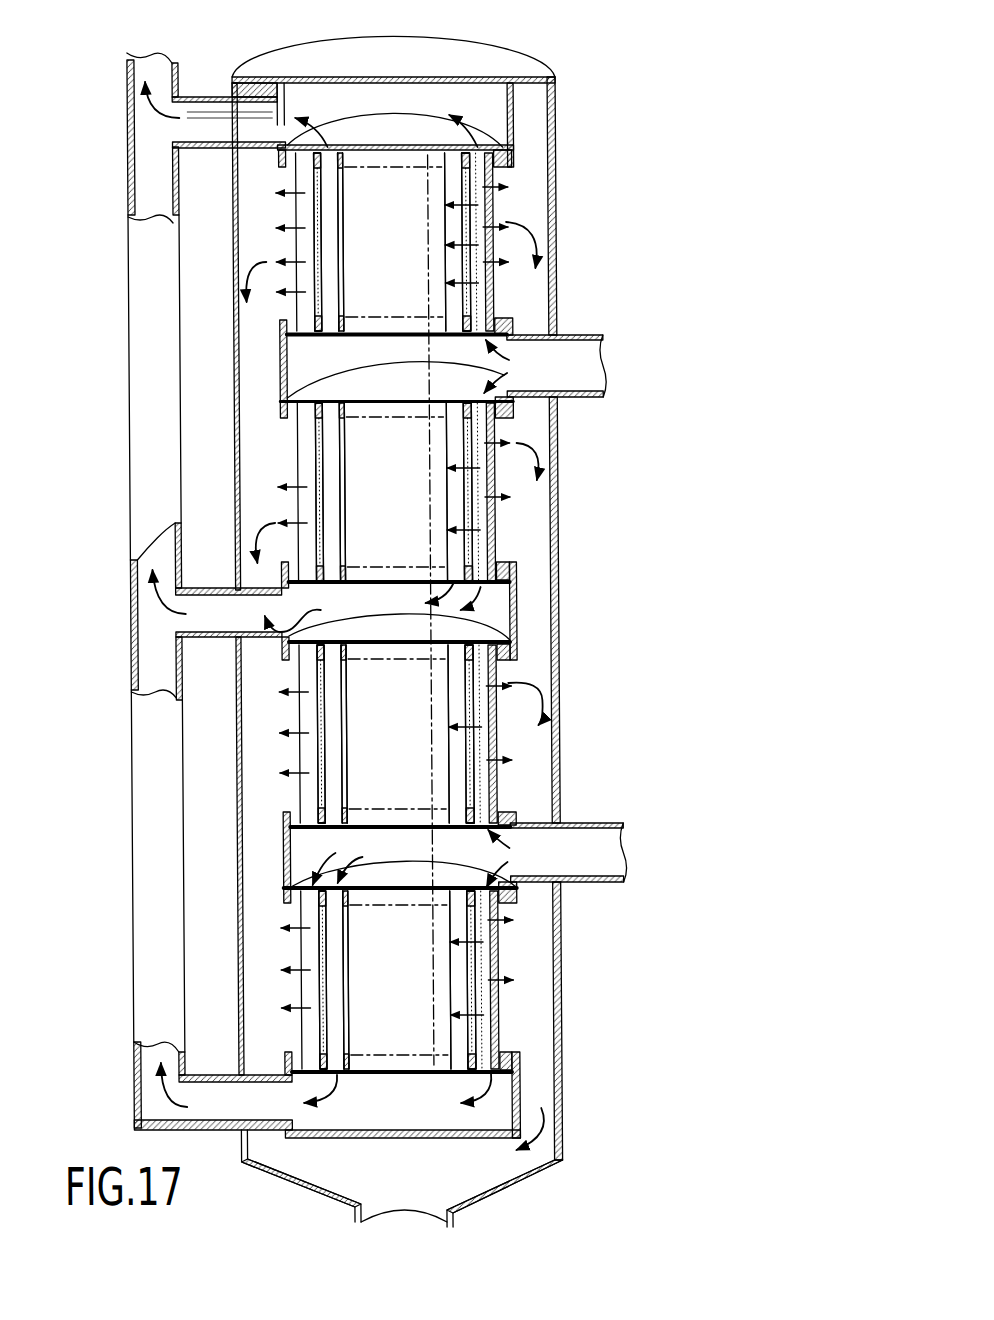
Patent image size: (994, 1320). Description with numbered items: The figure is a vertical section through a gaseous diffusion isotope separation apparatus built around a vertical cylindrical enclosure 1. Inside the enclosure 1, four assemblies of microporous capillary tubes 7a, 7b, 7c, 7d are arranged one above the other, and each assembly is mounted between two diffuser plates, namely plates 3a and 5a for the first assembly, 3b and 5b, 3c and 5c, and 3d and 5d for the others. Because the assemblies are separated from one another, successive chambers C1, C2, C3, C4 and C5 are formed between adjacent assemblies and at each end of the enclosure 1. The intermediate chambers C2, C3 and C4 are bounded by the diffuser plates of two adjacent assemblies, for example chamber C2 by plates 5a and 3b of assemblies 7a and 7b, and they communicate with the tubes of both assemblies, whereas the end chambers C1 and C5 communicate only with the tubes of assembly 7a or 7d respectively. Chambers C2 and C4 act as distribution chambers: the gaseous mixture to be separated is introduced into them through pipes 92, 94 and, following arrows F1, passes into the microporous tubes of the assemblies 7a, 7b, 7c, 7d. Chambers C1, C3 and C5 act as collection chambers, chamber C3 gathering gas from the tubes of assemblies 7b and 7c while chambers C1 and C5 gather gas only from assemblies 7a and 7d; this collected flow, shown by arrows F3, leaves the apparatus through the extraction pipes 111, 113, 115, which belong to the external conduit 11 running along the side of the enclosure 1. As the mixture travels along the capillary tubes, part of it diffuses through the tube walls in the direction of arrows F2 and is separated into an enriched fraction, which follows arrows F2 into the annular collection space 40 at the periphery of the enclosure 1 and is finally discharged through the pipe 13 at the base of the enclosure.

The vertical cylindrical enclosure 1 is at (557, 212).
The extraction pipe 11 is at (210, 591).
The extraction pipe 111 is at (202, 103).
The extraction pipe 113 is at (210, 597).
The extraction pipe 115 is at (215, 1090).
The end collection chamber C1 is at (518, 121).
The distribution chamber C2 is at (278, 383).
The collection chamber C3 is at (524, 613).
The distribution chamber C4 is at (280, 867).
The end collection chamber C5 is at (528, 1081).
The diffuser plate 3a is at (512, 172).
The diffuser plate 3b is at (517, 413).
The diffuser plate 3c is at (512, 645).
The diffuser plate 3d is at (517, 895).
The diffuser plate 5a is at (500, 312).
The diffuser plate 5b is at (500, 558).
The diffuser plate 5c is at (500, 808).
The diffuser plate 5d is at (500, 1038).
The microporous capillary tube assembly 7a is at (507, 283).
The microporous capillary tube assembly 7b is at (473, 548).
The microporous capillary tube assembly 7c is at (507, 746).
The microporous capillary tube assembly 7d is at (500, 957).
The inlet pipe 92 is at (594, 398).
The inlet pipe 94 is at (602, 822).
The annular collection space 40 is at (540, 933).
The discharge pipe 13 is at (445, 1214).
The gas flow arrows F1 is at (513, 367).
The diffusion flow arrows F2 is at (520, 467).
The collected gas flow arrows F3 is at (355, 1110).